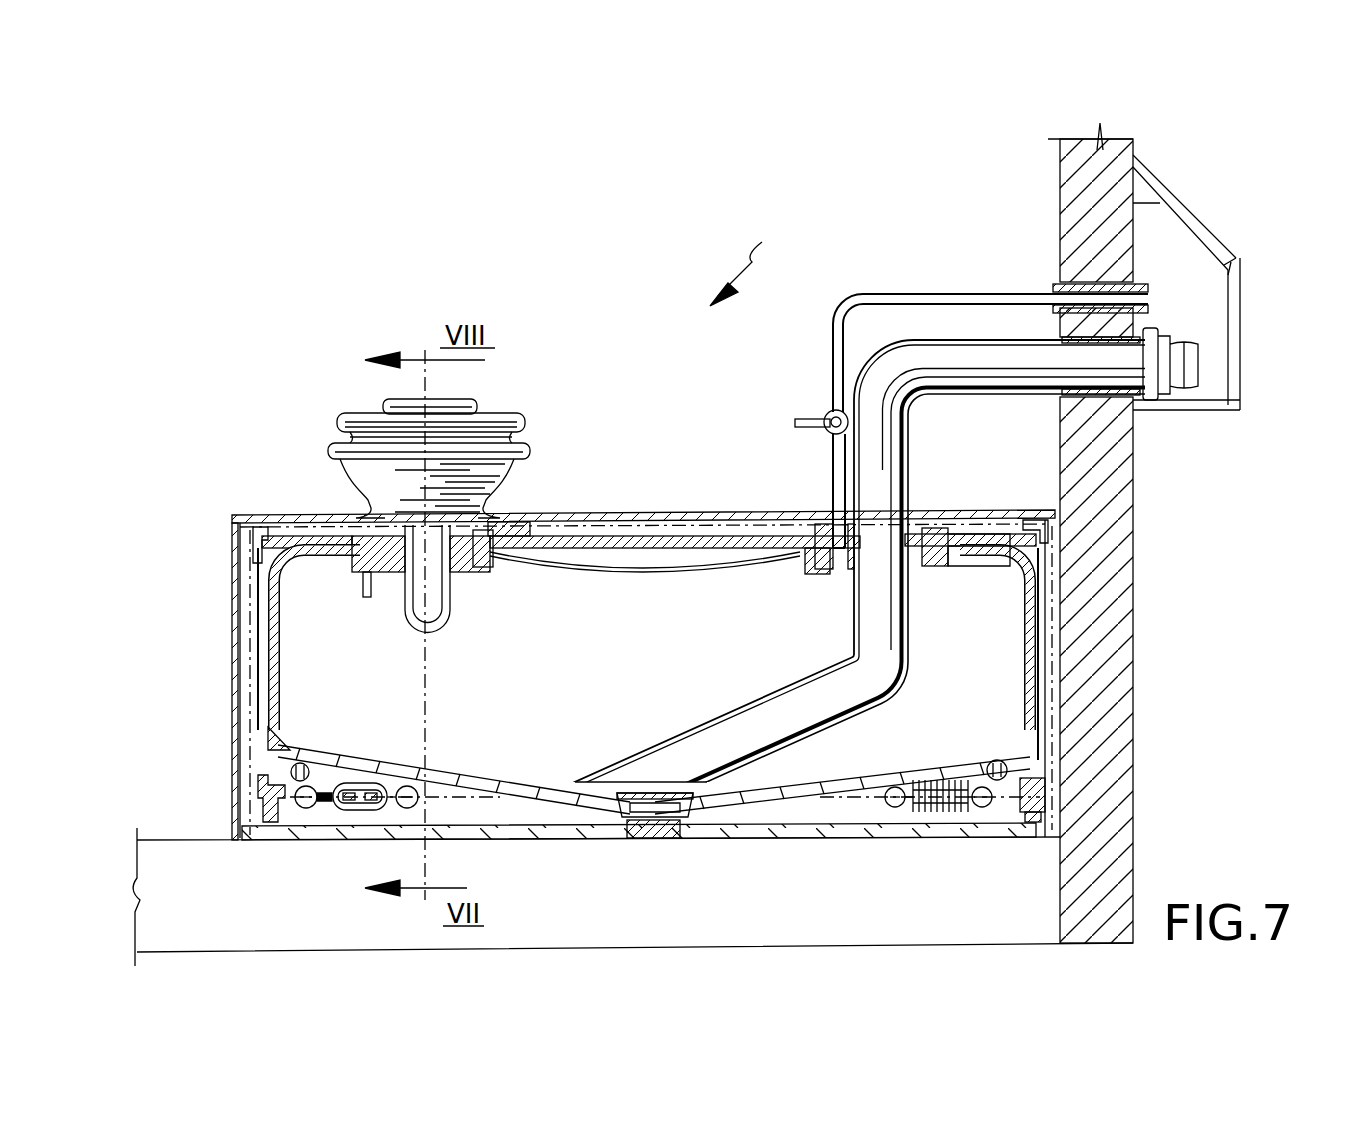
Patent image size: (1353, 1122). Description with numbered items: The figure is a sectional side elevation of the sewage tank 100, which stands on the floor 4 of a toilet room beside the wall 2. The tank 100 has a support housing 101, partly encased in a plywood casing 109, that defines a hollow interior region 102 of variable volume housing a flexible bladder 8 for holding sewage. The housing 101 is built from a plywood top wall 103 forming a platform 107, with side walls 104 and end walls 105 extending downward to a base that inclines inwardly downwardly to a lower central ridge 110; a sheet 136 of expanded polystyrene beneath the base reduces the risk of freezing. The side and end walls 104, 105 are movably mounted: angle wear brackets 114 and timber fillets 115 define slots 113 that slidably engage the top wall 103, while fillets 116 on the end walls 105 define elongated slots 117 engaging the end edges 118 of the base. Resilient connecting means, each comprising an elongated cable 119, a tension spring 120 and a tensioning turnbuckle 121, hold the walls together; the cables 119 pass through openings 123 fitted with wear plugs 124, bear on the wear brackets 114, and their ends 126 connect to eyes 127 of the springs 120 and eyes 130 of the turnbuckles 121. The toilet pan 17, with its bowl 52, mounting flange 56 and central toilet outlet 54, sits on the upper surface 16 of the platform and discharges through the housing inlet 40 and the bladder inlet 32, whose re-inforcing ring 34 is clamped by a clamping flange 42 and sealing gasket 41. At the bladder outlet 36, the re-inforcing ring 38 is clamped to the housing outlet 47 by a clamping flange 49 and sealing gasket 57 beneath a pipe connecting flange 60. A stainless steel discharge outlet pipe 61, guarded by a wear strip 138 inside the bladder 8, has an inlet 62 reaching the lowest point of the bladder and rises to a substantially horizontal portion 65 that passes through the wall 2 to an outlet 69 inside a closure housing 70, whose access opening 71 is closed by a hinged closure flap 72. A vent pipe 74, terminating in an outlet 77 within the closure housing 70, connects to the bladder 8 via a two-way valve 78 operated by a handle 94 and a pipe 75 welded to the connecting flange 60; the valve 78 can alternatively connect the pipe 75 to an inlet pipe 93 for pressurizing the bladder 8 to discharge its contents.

The wall 2 is at (1110, 170).
The floor 4 is at (170, 842).
The bladder 8 is at (256, 680).
The upper surface 16 is at (605, 536).
The toilet pan 17 is at (470, 450).
The bladder inlet 32 is at (510, 522).
The re-inforcing ring 34 is at (370, 572).
The bladder outlet 36 is at (928, 566).
The re-inforcing ring 38 is at (800, 560).
The housing inlet 40 is at (480, 570).
The sealing gasket 41 is at (368, 595).
The clamping flange 42 is at (490, 572).
The housing outlet 47 is at (812, 575).
The clamping flange 49 is at (962, 566).
The bowl 52 is at (520, 470).
The toilet outlet 54 is at (418, 612).
The mounting flange 56 is at (500, 515).
The sealing gasket 57 is at (845, 570).
The pipe connecting flange 60 is at (915, 534).
The discharge outlet pipe 61 is at (928, 343).
The inlet 62 is at (670, 778).
The portion 65 is at (905, 345).
The outlet 69 is at (1190, 345).
The closure housing 70 is at (1195, 212).
The access opening 71 is at (1242, 365).
The hinged closure flap 72 is at (1240, 408).
The vent pipe 74 is at (975, 293).
The pipe 75 is at (832, 470).
The outlet 77 is at (1160, 290).
The two-way valve 78 is at (828, 412).
The inlet pipe 93 is at (795, 420).
The handle 94 is at (828, 412).
The sewage tank 100 is at (752, 256).
The support housing 101 is at (238, 720).
The hollow interior region 102 is at (690, 565).
The top wall 103 is at (665, 540).
The side walls 104 is at (548, 840).
The end walls 105 is at (268, 640).
The platform 107 is at (770, 540).
The casing 109 is at (245, 640).
The lower central ridge 110 is at (648, 793).
The slots 113 is at (280, 514).
The angle wear brackets 114 is at (283, 527).
The timber fillets 115 is at (275, 545).
The fillets 116 is at (258, 790).
The elongated slots 117 is at (295, 752).
The end edges 118 is at (262, 750).
The cable 119 is at (278, 525).
The tension spring 120 is at (945, 815).
The tensioning turnbuckle 121 is at (345, 778).
The openings 123 is at (262, 812).
The wear plugs 124 is at (270, 824).
The ends 126 is at (415, 790).
The eyes 127 is at (895, 807).
The eyes 130 is at (318, 808).
The sheet of heat insulating material 136 is at (360, 825).
The wear strip 138 is at (668, 842).